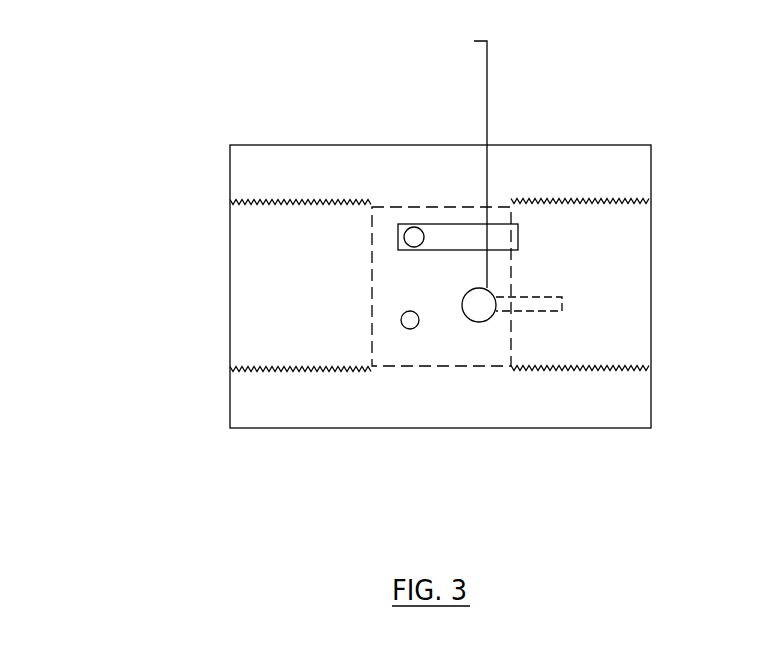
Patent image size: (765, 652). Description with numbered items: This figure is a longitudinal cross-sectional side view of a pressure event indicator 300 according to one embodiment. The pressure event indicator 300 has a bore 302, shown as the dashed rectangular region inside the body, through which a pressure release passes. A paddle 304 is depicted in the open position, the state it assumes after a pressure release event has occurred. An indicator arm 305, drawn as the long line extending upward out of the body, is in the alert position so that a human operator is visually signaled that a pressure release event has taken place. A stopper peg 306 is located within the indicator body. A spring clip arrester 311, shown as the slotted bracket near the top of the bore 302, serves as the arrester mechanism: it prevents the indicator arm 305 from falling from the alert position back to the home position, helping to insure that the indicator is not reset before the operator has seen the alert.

The pressure event indicator 300 is at (182, 143).
The bore 302 is at (388, 279).
The paddle 304 is at (537, 311).
The indicator arm 305 is at (480, 71).
The stopper peg 306 is at (410, 330).
The spring clip arrester 311 is at (418, 225).